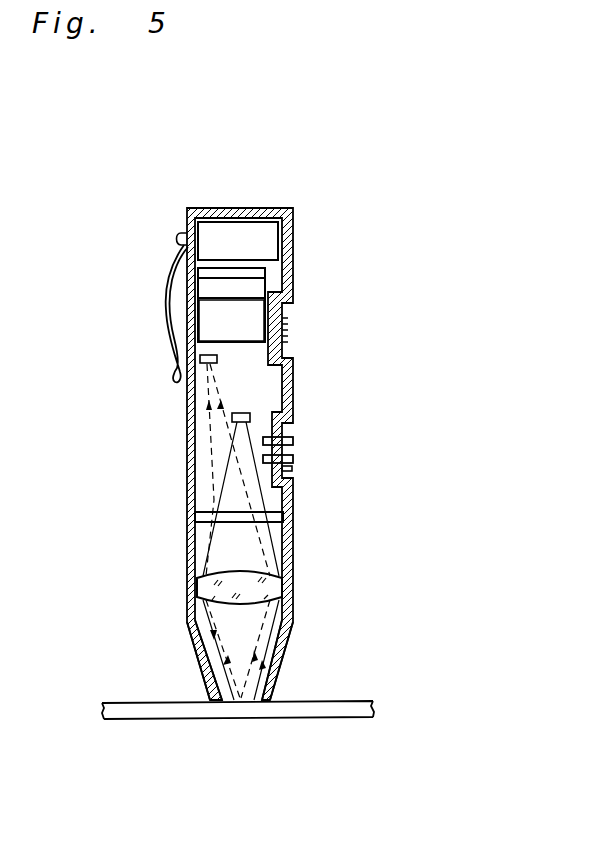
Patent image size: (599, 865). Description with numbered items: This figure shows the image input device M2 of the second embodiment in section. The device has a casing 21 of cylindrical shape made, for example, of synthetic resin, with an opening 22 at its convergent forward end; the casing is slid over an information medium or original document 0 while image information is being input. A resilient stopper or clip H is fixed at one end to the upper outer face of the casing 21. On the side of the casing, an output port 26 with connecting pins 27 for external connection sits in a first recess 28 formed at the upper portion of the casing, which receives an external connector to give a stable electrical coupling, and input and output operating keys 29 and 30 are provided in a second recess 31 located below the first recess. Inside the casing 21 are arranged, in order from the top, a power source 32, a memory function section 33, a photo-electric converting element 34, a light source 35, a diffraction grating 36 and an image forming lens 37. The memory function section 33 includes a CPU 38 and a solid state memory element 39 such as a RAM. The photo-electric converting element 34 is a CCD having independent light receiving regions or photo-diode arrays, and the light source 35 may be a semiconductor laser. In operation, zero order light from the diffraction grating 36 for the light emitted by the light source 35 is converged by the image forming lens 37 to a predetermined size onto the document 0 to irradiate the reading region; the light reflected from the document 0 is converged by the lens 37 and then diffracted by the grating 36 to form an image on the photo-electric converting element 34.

The image input device M2 is at (337, 190).
The resilient stopper or clip H is at (166, 284).
The information medium or original document 0 is at (367, 713).
The casing 21 is at (288, 232).
The opening 22 is at (290, 696).
The output port 26 is at (292, 327).
The connecting pins 27 is at (290, 307).
The first recess 28 is at (288, 345).
The input operating key 29 is at (294, 438).
The output operating key 30 is at (294, 460).
The second recess 31 is at (294, 470).
The power source 32 is at (248, 233).
The memory function section 33 is at (256, 288).
The photo-electric converting element 34 is at (185, 393).
The light source 35 is at (232, 418).
The diffraction grating 36 is at (233, 517).
The image forming lens 37 is at (210, 600).
The CPU 38 is at (198, 296).
The solid state memory element 39 is at (210, 322).